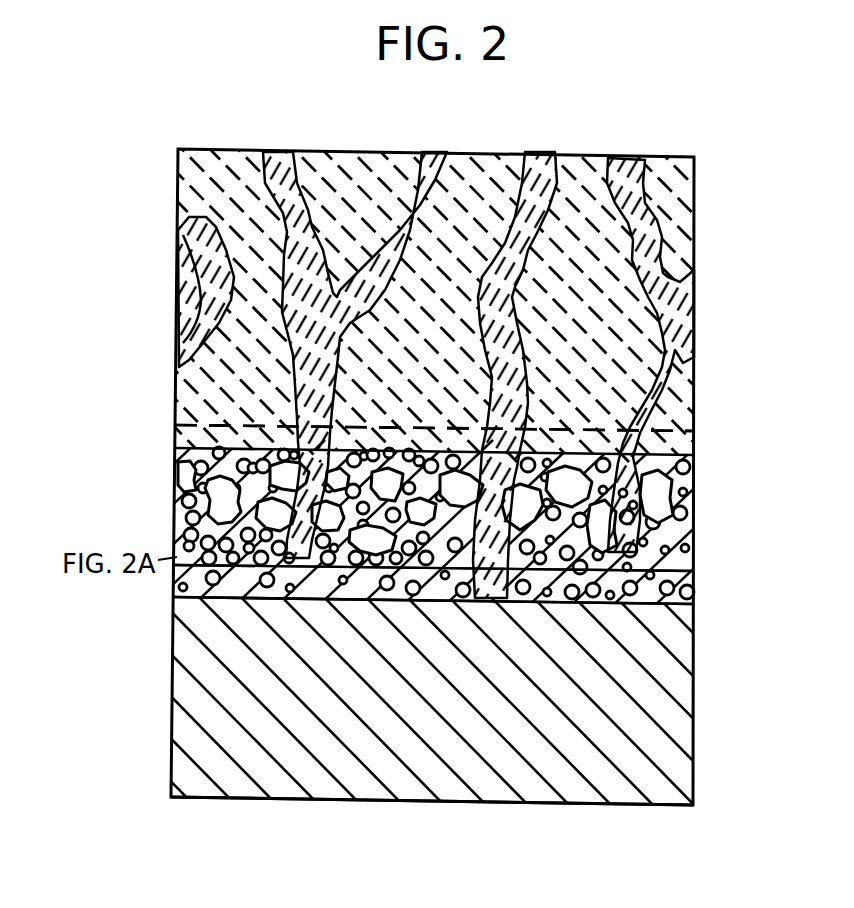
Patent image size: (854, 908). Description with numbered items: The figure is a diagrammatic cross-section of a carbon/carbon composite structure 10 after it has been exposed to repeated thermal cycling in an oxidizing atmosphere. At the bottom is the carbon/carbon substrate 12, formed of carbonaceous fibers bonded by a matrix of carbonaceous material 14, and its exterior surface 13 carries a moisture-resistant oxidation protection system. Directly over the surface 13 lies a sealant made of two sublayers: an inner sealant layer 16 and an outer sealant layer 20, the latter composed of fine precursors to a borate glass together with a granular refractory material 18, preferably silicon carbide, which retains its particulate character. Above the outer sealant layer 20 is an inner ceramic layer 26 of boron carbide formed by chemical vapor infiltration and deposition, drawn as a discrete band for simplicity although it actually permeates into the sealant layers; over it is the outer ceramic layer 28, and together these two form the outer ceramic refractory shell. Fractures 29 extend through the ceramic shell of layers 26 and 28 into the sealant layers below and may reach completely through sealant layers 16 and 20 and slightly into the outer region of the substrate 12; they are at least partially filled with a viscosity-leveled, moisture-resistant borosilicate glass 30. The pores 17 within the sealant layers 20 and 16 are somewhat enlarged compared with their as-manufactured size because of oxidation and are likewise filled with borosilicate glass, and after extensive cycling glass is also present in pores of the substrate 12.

The carbon/carbon composite structure 10 is at (160, 140).
The carbon/carbon substrate 12 is at (733, 607).
The exterior surface 13 is at (175, 575).
The matrix of carbonaceous material 14 is at (625, 790).
The inner sealant layer 16 is at (733, 562).
The pores 17 is at (177, 435).
The granular refractory material 18 is at (175, 477).
The outer sealant layer 20 is at (733, 562).
The inner ceramic layer 26 is at (733, 427).
The outer ceramic layer 28 is at (733, 157).
The fractures 29 is at (527, 153).
The borosilicate glass 30 is at (283, 168).